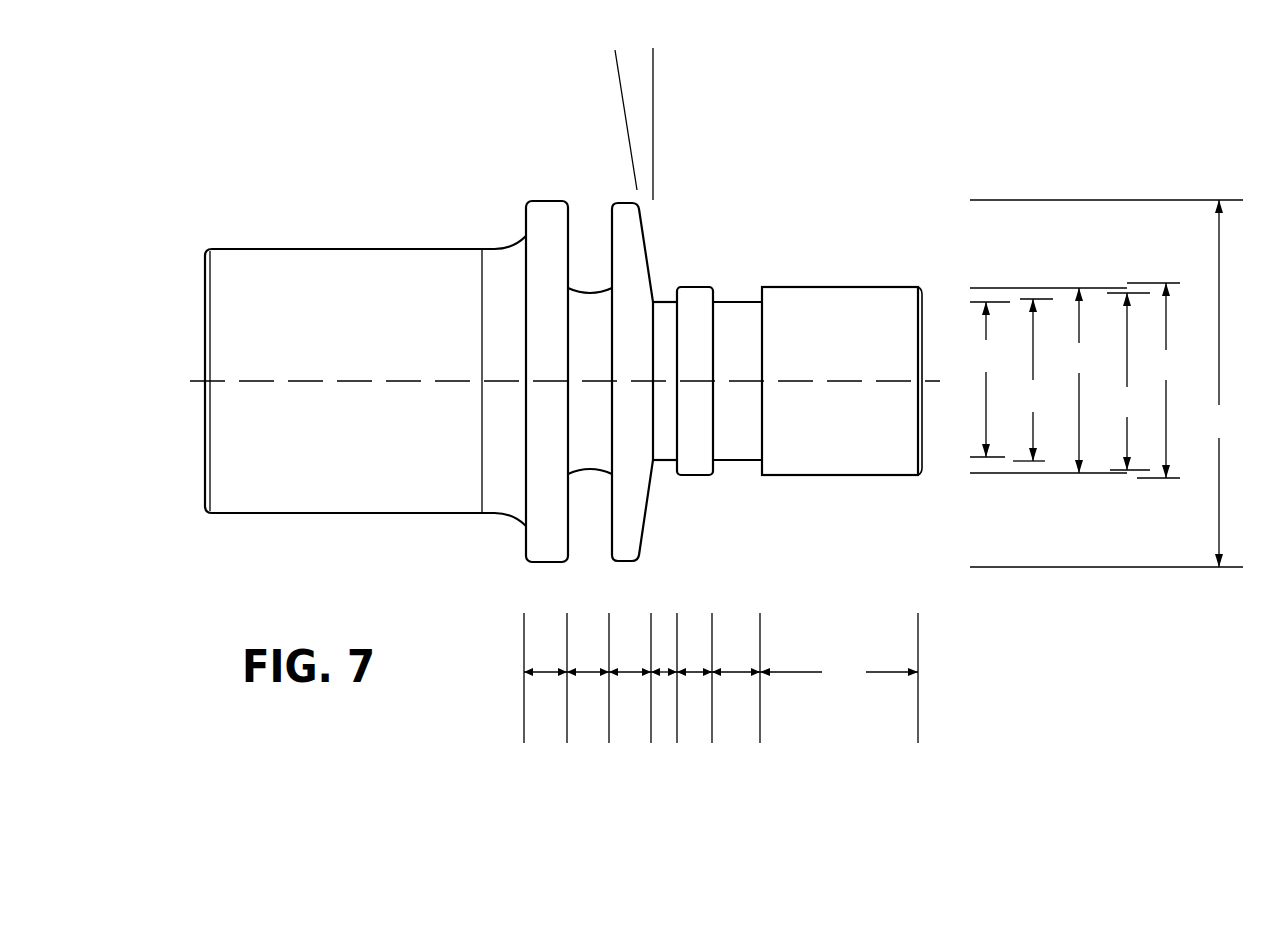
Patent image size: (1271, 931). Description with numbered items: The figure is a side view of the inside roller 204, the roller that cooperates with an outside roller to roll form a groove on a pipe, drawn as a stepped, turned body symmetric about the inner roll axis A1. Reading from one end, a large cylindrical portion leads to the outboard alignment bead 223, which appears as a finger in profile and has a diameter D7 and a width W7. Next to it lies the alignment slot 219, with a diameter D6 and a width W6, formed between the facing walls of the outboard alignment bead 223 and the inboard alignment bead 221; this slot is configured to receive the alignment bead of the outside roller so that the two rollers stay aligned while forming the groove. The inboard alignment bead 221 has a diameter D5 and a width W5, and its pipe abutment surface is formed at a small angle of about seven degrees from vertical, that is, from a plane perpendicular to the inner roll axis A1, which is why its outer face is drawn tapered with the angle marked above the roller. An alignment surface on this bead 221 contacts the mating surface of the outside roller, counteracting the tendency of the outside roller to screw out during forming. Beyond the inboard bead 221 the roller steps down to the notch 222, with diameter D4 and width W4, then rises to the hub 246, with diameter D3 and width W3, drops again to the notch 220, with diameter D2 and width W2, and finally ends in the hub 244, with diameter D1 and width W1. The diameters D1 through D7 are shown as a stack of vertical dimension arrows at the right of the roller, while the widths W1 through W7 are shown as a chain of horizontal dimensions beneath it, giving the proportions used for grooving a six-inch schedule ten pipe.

The inside roller 204 is at (424, 218).
The outboard alignment bead 223 is at (532, 202).
The alignment slot 219 is at (589, 290).
The inboard alignment bead 221 is at (622, 200).
The notch 222 is at (665, 300).
The hub 246 is at (702, 284).
The notch 220 is at (745, 303).
The hub 244 is at (852, 287).
The inner roll axis A1 is at (297, 385).
The diameter of hub 244 D1 is at (1048, 380).
The diameter of notch 220 D2 is at (987, 379).
The diameter of hub 246 D3 is at (1128, 381).
The diameter of notch 222 D4 is at (1033, 380).
The diameter of alignment bead 221 D5 is at (1220, 383).
The diameter of slot 219 D6 is at (1153, 380).
The diameter of alignment bead 223 D7 is at (1106, 383).
The width of hub 244 W1 is at (839, 678).
The width of notch 220 W2 is at (730, 676).
The width of hub 246 W3 is at (697, 676).
The width of notch 222 W4 is at (662, 676).
The width of bead 221 W5 is at (623, 676).
The width of slot 219 W6 is at (585, 676).
The width of bead 223 W7 is at (545, 676).